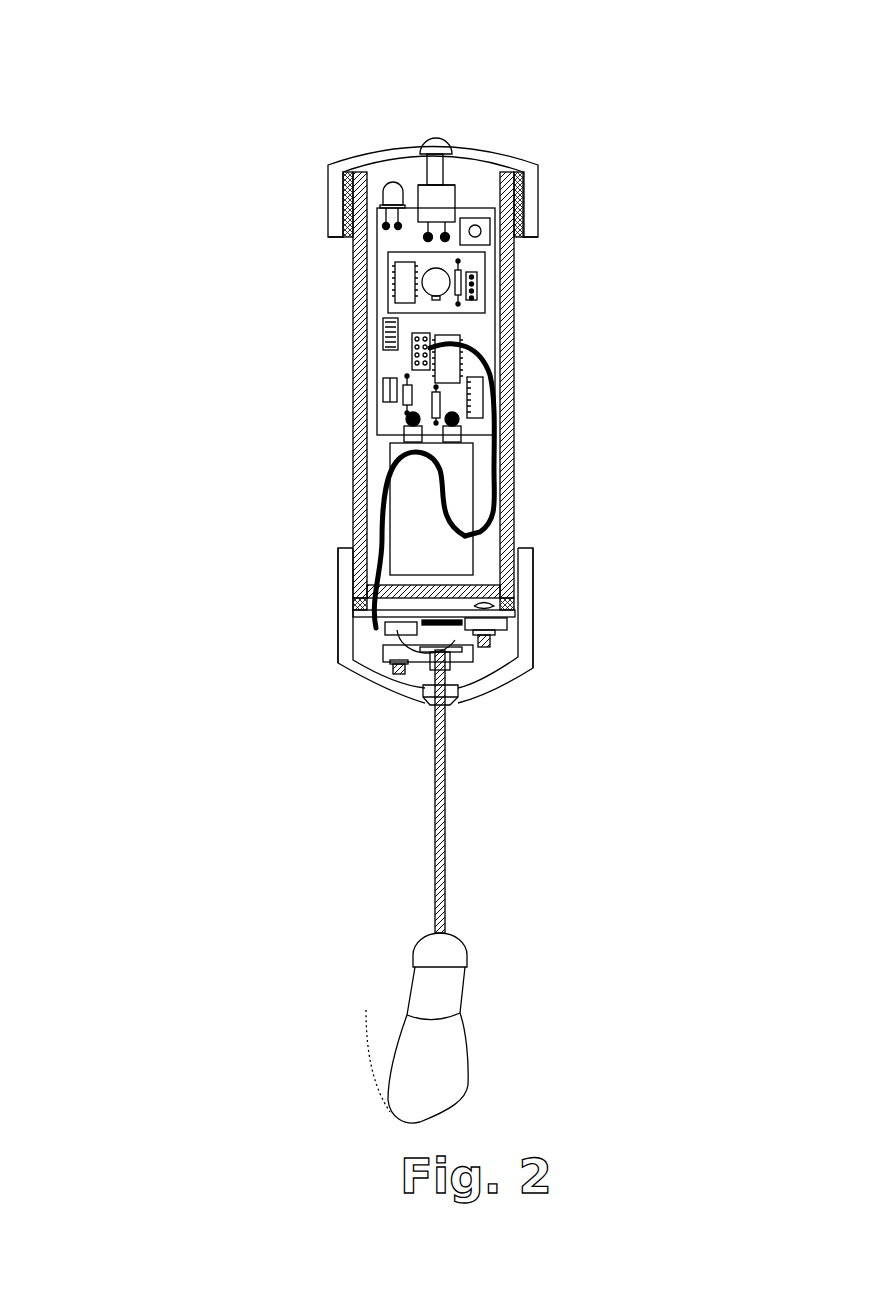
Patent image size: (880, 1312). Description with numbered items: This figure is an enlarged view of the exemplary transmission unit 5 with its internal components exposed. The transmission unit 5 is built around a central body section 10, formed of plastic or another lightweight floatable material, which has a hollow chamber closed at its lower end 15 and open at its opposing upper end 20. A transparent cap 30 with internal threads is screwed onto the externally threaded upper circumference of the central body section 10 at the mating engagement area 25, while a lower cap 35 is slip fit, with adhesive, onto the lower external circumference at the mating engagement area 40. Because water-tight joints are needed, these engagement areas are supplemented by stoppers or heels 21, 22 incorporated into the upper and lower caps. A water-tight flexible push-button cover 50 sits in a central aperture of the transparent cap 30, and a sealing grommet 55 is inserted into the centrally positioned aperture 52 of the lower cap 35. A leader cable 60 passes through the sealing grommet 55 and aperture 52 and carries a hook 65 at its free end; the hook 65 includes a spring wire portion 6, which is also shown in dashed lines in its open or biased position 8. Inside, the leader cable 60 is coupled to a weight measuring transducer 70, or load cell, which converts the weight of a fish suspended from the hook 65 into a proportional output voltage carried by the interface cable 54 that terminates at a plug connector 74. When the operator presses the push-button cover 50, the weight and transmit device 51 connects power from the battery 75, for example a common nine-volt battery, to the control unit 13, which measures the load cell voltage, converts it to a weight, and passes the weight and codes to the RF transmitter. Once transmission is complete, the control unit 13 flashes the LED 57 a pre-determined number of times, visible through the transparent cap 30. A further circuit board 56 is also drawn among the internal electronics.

The transmission unit 5 is at (420, 109).
The spring wire portion 6 is at (470, 1050).
The open or biased position 8 is at (368, 1062).
The central body section 10 is at (517, 422).
The control unit 13 is at (377, 373).
The lower end 15 is at (491, 583).
The upper end 20 is at (454, 176).
The stopper or heel 21 is at (343, 168).
The stopper or heel 22 is at (353, 612).
The mating engagement area 25 is at (343, 213).
The transparent cap 30 is at (543, 193).
The lower cap 35 is at (338, 597).
The mating engagement area 40 is at (338, 560).
The push-button cover 50 is at (452, 140).
The weight and transmit device 51 is at (418, 186).
The aperture 52 is at (433, 706).
The interface cable 54 is at (393, 480).
The sealing grommet 55 is at (460, 705).
The processor board 56 is at (393, 310).
The LED 57 is at (381, 193).
The leader cable 60 is at (435, 862).
The hook 65 is at (410, 982).
The weight measuring transducer 70 is at (385, 650).
The plug connector 74 is at (431, 340).
The battery 75 is at (473, 475).